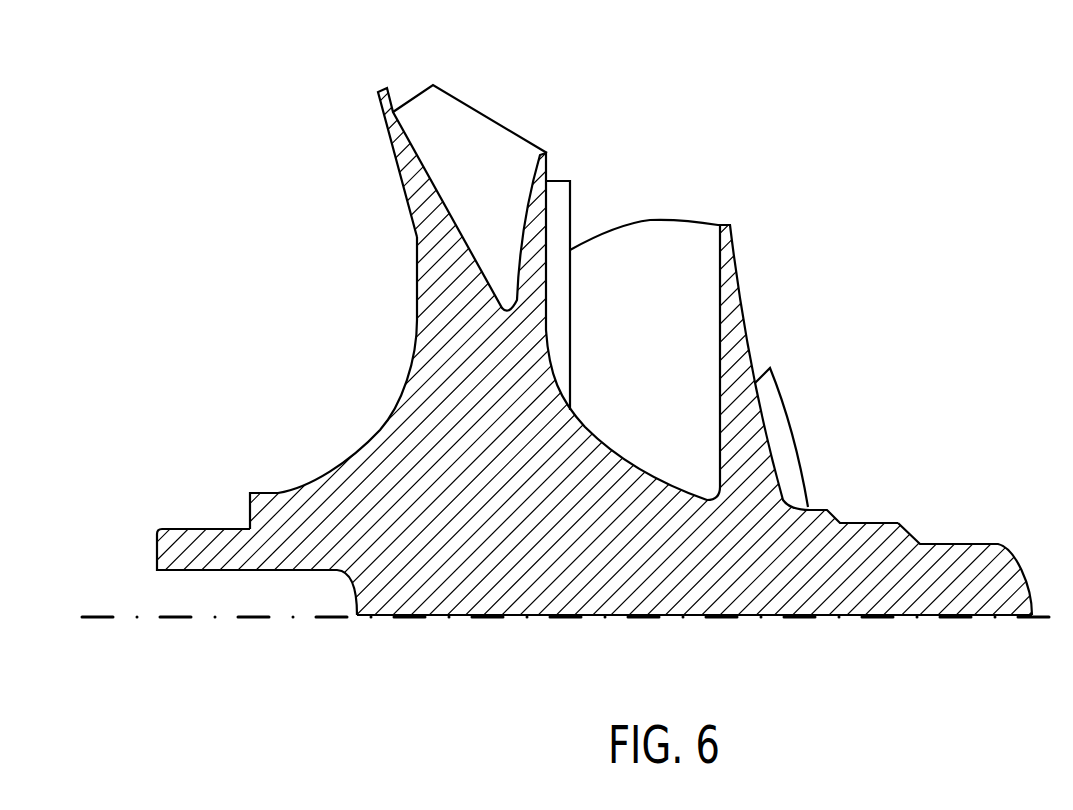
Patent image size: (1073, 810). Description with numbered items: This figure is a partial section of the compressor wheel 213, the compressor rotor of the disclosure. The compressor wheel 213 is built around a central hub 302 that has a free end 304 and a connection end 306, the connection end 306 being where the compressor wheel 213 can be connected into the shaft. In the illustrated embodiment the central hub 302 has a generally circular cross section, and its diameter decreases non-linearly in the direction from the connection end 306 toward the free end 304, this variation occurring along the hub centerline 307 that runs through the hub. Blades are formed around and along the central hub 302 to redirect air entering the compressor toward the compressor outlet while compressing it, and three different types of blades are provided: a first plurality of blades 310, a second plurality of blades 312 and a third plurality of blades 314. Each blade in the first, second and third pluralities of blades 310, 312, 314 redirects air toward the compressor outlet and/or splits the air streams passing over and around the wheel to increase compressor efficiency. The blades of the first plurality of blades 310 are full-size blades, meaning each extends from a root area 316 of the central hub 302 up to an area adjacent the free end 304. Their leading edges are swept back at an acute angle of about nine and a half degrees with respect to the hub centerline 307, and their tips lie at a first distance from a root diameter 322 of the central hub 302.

The compressor wheel 213 is at (950, 155).
The central hub 302 is at (560, 597).
The free end 304 is at (968, 563).
The connection end 306 is at (184, 556).
The hub centerline 307 is at (1072, 633).
The first plurality of blades 310 is at (673, 240).
The second plurality of blades 312 is at (562, 202).
The third plurality of blades 314 is at (500, 138).
The root area 316 is at (309, 138).
The root diameter 322 is at (227, 497).